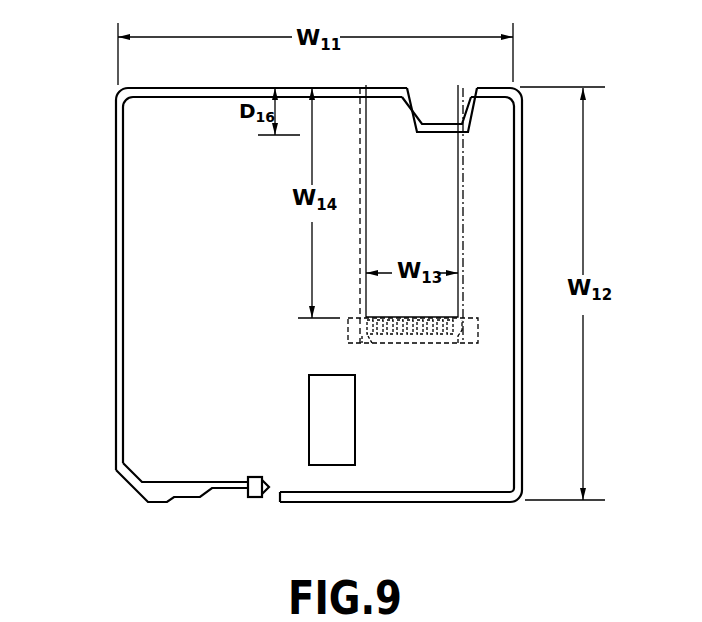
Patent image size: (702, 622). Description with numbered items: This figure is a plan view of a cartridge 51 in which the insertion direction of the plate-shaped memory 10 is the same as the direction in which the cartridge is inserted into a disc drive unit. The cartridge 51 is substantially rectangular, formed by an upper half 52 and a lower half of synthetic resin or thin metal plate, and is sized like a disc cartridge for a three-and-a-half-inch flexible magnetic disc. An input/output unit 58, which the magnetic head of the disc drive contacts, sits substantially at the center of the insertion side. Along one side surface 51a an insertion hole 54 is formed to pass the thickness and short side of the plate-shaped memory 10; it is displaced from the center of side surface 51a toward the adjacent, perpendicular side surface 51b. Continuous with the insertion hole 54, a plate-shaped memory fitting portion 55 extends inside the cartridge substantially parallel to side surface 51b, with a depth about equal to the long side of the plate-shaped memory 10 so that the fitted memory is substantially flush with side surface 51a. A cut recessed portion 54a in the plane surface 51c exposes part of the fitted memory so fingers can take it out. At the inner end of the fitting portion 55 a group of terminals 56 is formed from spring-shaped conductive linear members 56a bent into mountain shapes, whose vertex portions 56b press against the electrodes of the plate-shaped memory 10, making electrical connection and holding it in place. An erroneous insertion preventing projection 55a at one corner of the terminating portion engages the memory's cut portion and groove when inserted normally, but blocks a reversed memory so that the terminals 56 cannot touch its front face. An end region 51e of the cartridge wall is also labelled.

The plate-shaped memory 10 is at (437, 100).
The cartridge 51 is at (310, 281).
The side surface 51a is at (203, 87).
The side surface 51b is at (525, 401).
The plane surface 51c is at (432, 485).
The end of bottom wall 51e is at (315, 505).
The upper half 52 is at (143, 403).
The insertion hole 54 is at (416, 66).
The cut recessed portion 54a is at (468, 97).
The plate-shaped memory fitting portion 55 is at (468, 178).
The erroneous insertion preventing projection 55a is at (462, 348).
The group of terminals 56 is at (393, 366).
The linear members 56a is at (370, 343).
The vertex portions 56b is at (380, 343).
The input/output unit 58 is at (340, 453).